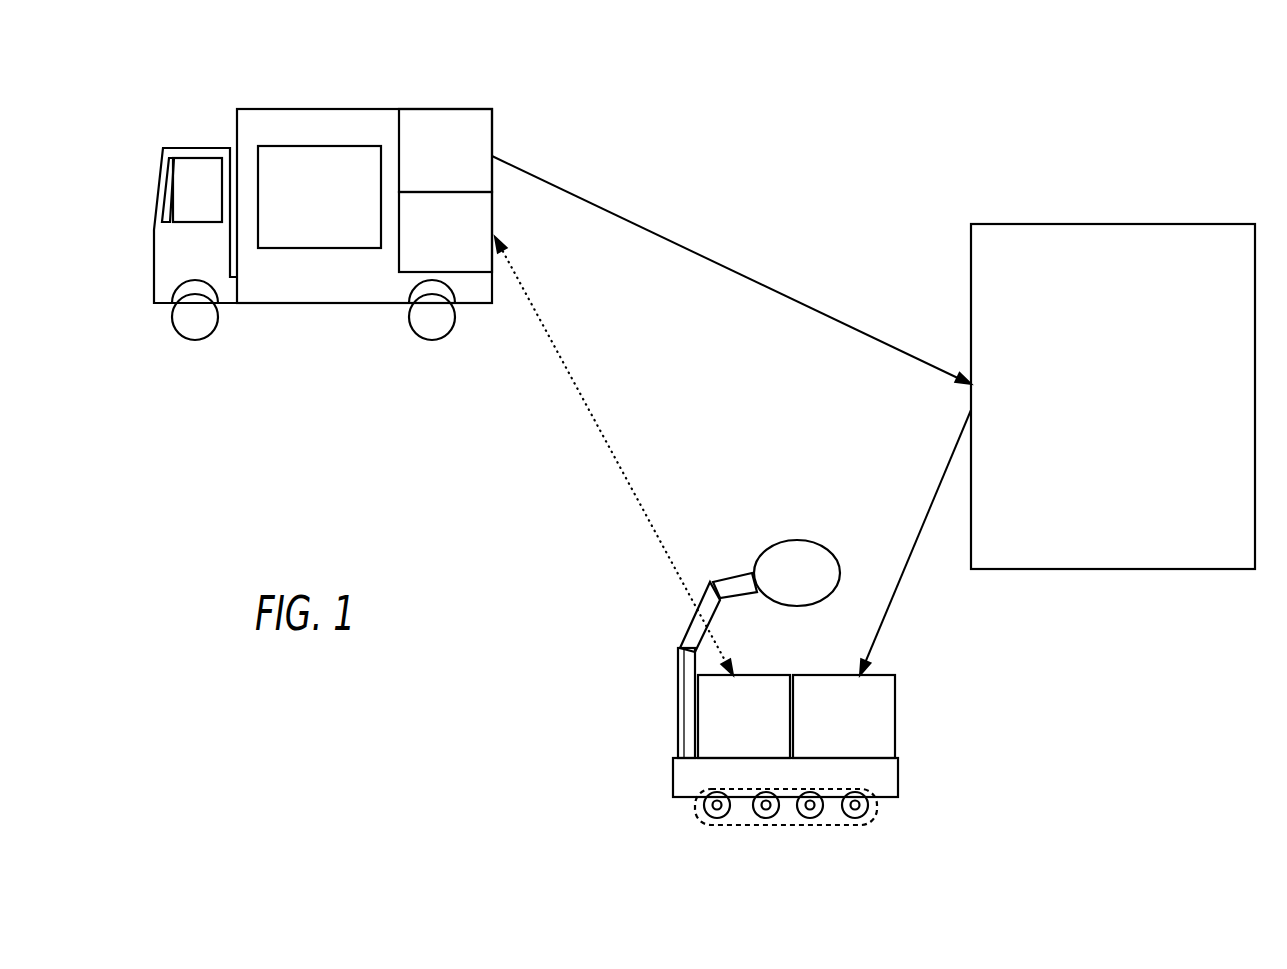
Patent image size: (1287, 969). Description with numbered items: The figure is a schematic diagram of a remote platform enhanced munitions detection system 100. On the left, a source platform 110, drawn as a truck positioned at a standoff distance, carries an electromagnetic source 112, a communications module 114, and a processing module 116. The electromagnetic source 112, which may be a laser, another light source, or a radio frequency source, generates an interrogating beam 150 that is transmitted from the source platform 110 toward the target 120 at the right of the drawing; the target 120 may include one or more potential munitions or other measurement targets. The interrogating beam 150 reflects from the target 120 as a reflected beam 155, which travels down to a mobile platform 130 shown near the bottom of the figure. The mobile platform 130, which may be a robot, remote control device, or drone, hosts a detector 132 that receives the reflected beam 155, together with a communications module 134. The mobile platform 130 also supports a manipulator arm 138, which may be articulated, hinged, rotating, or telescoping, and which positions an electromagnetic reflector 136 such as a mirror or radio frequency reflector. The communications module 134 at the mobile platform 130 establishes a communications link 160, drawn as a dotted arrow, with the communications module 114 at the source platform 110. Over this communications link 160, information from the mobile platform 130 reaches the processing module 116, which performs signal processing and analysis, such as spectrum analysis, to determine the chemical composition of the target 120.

The remote platform enhanced munitions detection system 100 is at (600, 70).
The source platform 110 is at (323, 211).
The electromagnetic source 112 is at (458, 172).
The communications module 114 is at (458, 252).
The processing module 116 is at (333, 218).
The target 120 is at (1126, 418).
The mobile platform 130 is at (880, 788).
The detector 132 is at (857, 738).
The communications module 134 is at (757, 738).
The electromagnetic reflector 136 is at (772, 543).
The manipulator arm 138 is at (680, 640).
The interrogating beam 150 is at (682, 200).
The reflected beam 155 is at (927, 502).
The communications link 160 is at (581, 397).